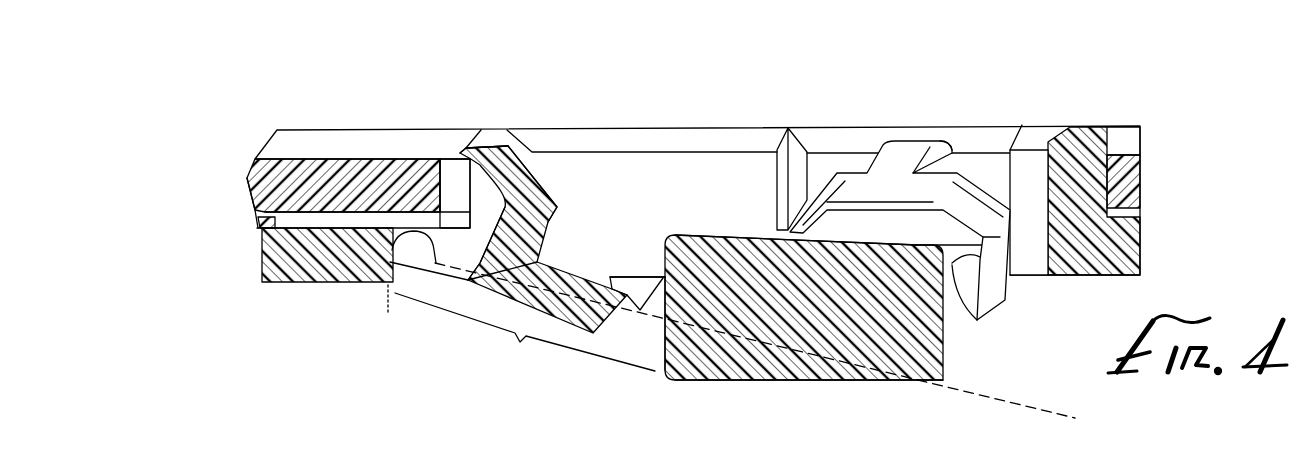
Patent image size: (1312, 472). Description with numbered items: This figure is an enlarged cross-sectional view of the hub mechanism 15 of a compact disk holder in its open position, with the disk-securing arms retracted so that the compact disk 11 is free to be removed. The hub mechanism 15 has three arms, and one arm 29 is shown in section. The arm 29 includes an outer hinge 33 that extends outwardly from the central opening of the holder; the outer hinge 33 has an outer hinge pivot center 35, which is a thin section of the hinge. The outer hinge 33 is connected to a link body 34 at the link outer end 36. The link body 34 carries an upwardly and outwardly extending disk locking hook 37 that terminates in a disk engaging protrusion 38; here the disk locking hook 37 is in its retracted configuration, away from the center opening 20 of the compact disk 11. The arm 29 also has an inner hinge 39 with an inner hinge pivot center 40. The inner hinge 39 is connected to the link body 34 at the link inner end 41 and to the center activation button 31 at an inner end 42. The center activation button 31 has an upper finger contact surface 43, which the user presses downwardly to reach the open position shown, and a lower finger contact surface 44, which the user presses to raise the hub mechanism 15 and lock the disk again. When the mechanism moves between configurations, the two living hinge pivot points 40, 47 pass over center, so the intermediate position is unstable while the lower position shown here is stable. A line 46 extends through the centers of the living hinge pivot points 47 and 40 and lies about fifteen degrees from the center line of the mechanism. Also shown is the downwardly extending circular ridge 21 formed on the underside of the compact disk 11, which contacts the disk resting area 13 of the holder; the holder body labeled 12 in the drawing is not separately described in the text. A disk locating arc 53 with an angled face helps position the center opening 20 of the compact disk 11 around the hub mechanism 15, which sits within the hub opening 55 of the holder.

The compact disk 11 is at (1140, 126).
The housing wall 12 is at (308, 278).
The disk resting area 13 is at (357, 230).
The hub mechanism 15 is at (912, 122).
The center opening of CD 20 is at (440, 207).
The downwardly extending circular ridge 21 is at (264, 250).
The arm 29 is at (522, 335).
The center activation button 31 is at (773, 382).
The outer hinge 33 is at (417, 265).
The link body 34 is at (570, 265).
The outer hinge pivot center 35 is at (383, 235).
The link outer end 36 is at (460, 273).
The disk locking hook 37 is at (495, 148).
The disk engaging protrusion 38 is at (460, 150).
The inner hinge 39 is at (637, 277).
The inner hinge pivot center 40 is at (632, 317).
The link inner end 41 is at (613, 277).
The inner end 42 is at (663, 345).
The upper finger contact surface 43 is at (750, 235).
The lower finger contact surface 44 is at (890, 383).
The line 46 is at (990, 398).
The living hinge pivot point 47 is at (437, 268).
The disk locating arc 53 is at (1048, 140).
The hub opening 55 is at (1045, 167).